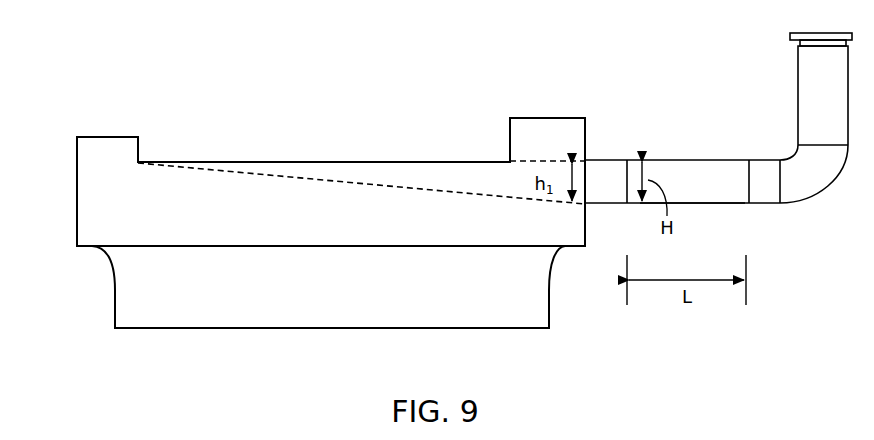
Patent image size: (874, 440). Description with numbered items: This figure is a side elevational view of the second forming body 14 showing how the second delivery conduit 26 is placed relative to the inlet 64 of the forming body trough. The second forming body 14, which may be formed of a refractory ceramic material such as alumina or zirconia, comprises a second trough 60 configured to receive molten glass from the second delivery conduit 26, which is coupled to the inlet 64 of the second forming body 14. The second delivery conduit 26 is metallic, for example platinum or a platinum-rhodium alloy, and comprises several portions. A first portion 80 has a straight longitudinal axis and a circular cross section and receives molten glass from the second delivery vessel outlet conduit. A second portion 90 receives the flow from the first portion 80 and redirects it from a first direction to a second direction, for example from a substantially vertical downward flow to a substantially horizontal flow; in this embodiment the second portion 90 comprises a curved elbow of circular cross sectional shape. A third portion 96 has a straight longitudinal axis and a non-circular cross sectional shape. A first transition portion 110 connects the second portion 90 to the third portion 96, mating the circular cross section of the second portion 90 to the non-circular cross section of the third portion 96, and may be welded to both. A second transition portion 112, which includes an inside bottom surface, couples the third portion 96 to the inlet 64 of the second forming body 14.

The second forming body 14 is at (76, 186).
The second trough 60 is at (472, 192).
The inlet 64 is at (586, 186).
The second delivery conduit 26 is at (683, 134).
The second transition portion 112 is at (604, 160).
The first transition portion 110 is at (764, 158).
The third portion 96 is at (686, 204).
The second portion 90 is at (795, 205).
The first portion 80 is at (797, 78).